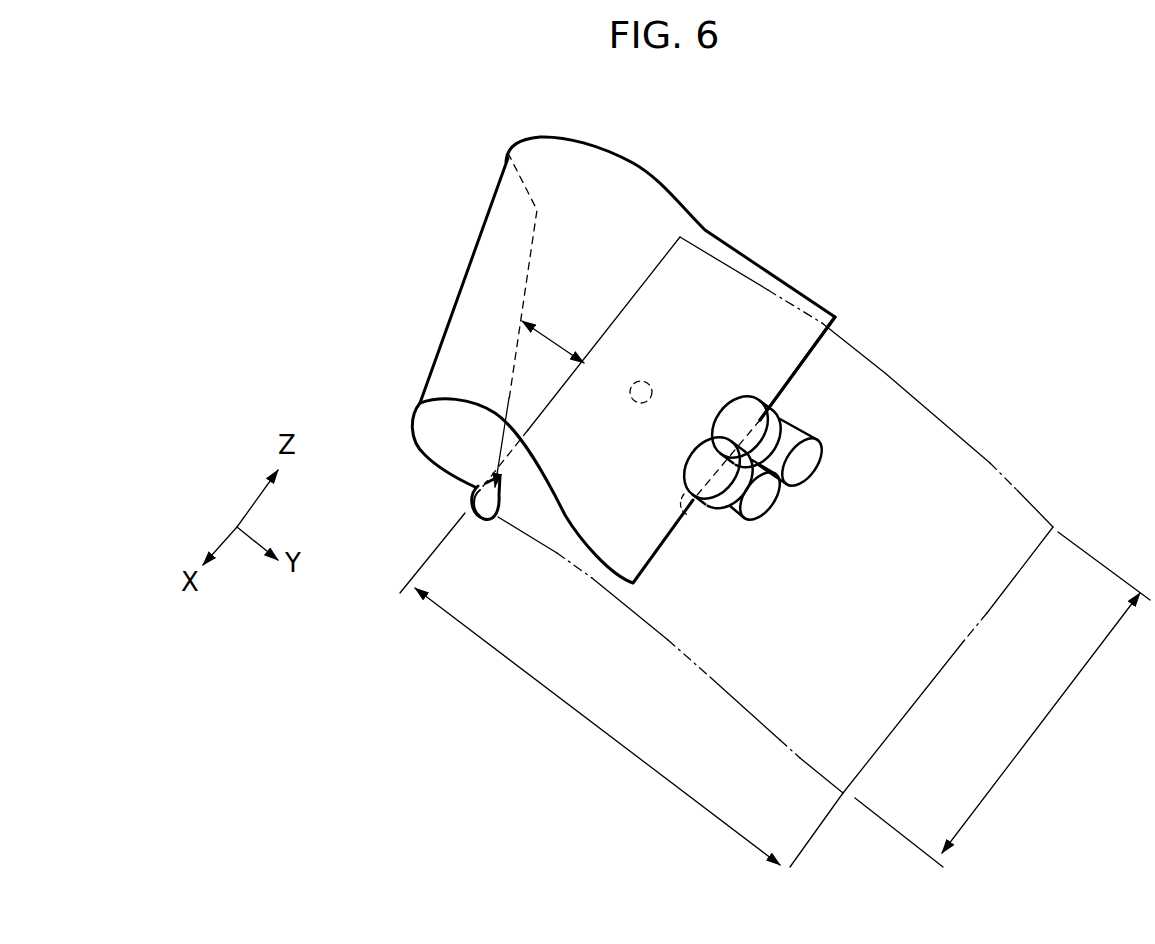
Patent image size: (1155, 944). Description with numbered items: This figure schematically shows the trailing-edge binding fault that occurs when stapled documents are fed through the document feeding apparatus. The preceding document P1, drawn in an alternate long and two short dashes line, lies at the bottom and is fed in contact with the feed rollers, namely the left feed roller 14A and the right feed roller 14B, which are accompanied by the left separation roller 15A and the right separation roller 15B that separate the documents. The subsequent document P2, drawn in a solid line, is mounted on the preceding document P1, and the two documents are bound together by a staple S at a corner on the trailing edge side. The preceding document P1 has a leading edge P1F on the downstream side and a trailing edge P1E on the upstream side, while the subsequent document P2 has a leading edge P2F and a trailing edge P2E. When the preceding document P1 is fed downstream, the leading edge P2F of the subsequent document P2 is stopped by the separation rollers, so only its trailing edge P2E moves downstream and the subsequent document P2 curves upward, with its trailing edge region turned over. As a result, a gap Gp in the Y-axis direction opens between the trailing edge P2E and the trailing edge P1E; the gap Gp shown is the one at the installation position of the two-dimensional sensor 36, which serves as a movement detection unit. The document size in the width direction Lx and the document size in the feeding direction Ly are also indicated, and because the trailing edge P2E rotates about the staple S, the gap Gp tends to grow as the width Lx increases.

The preceding document P1 is at (887, 372).
The subsequent document P2 is at (588, 146).
The trailing edge of the preceding document P1E is at (674, 244).
The trailing edge of the subsequent document P2E is at (527, 283).
The leading edge of the preceding document P1F is at (963, 642).
The leading edge of the subsequent document P2F is at (803, 363).
The gap Gp is at (554, 337).
The two-dimensional sensor 36 is at (652, 381).
The left feed roller 14A is at (735, 540).
The right feed roller 14B is at (818, 468).
The left separation roller 15A is at (766, 527).
The right separation roller 15B is at (805, 478).
The staple S is at (490, 487).
The document size in the document feeding direction Ly is at (621, 690).
The document size in the width direction Lx is at (1002, 699).